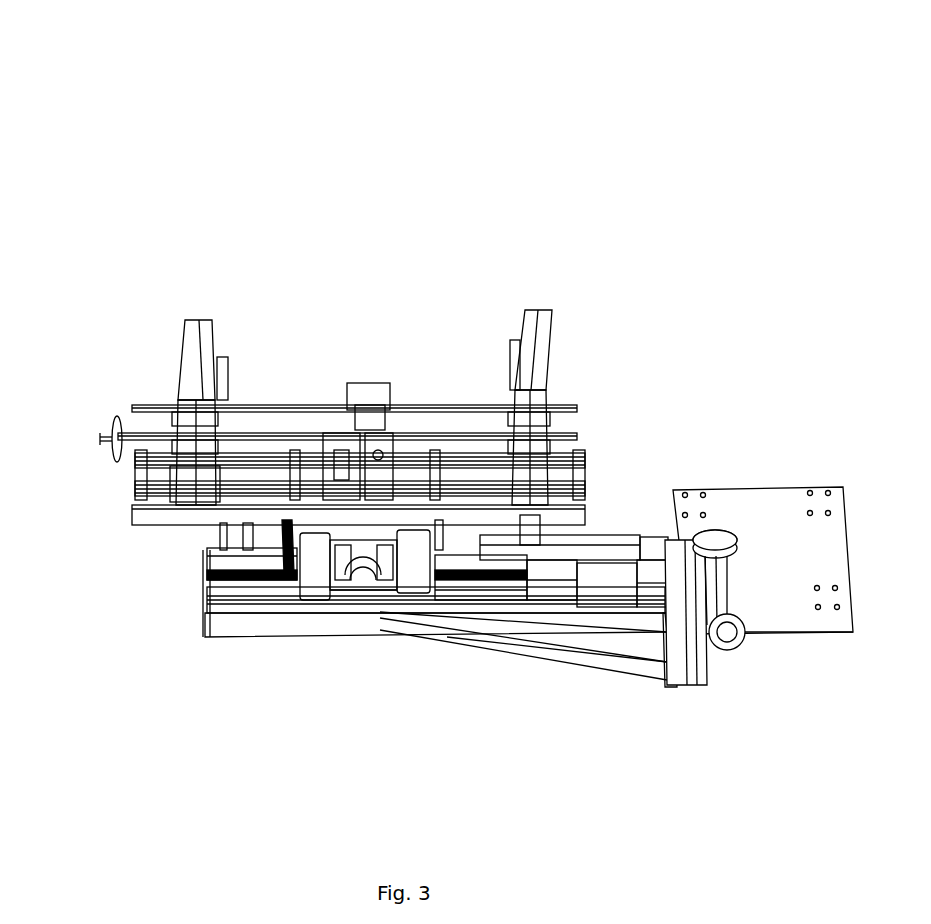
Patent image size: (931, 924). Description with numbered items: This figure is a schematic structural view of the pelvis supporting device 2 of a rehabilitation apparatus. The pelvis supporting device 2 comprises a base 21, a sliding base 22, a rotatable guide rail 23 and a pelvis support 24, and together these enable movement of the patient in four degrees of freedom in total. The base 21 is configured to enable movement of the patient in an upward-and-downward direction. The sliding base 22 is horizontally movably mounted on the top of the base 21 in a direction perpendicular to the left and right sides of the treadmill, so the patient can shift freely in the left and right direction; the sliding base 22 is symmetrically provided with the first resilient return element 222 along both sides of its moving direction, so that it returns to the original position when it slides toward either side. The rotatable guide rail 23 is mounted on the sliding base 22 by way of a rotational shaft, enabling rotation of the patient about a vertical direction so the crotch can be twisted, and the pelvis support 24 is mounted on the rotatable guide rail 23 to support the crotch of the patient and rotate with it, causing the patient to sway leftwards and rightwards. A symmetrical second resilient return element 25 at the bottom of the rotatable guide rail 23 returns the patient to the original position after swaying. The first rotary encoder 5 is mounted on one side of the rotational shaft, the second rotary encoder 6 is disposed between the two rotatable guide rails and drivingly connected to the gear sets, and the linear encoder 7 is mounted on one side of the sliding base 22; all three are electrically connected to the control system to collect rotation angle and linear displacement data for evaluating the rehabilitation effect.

The pelvis supporting device 2 is at (303, 118).
The first rotary encoder 5 is at (362, 580).
The second rotary encoder 6 is at (393, 430).
The linear encoder 7 is at (583, 542).
The base 21 is at (607, 613).
The sliding base 22 is at (318, 612).
The first resilient return element 222 is at (238, 585).
The rotatable guide rail 23 is at (185, 512).
The pelvis support 24 is at (202, 342).
The second resilient return element 25 is at (202, 635).